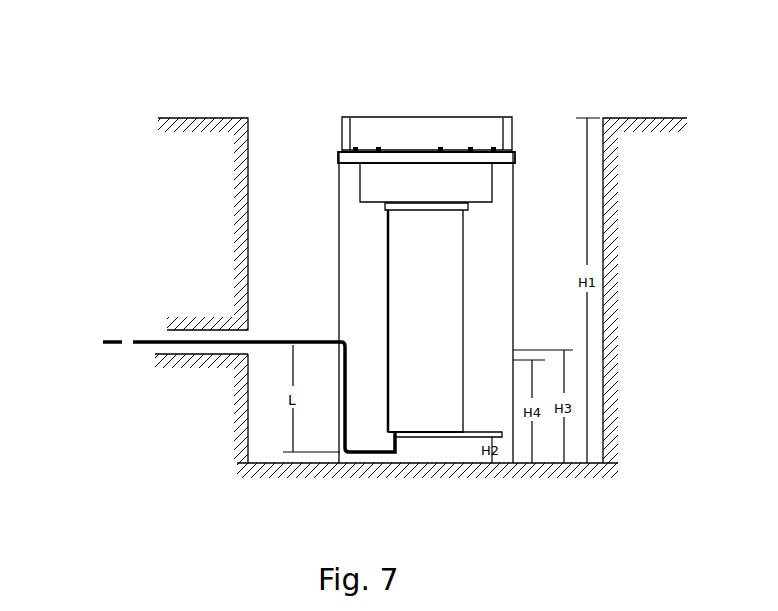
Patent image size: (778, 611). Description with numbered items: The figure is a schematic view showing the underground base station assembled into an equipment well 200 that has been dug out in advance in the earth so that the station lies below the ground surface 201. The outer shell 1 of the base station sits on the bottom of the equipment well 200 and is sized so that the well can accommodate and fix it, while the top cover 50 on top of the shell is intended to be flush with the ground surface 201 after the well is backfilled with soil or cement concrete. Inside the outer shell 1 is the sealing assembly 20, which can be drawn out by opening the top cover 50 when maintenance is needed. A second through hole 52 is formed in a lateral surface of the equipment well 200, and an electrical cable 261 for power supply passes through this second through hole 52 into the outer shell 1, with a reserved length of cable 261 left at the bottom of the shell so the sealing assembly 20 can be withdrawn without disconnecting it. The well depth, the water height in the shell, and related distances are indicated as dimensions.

The equipment well 200 is at (272, 113).
The ground surface 201 is at (643, 113).
The outer shell 1 is at (514, 130).
The top cover 50 is at (414, 117).
The sealing assembly 20 is at (388, 318).
The electrical cable 261 is at (147, 338).
The second through hole 52 is at (160, 356).